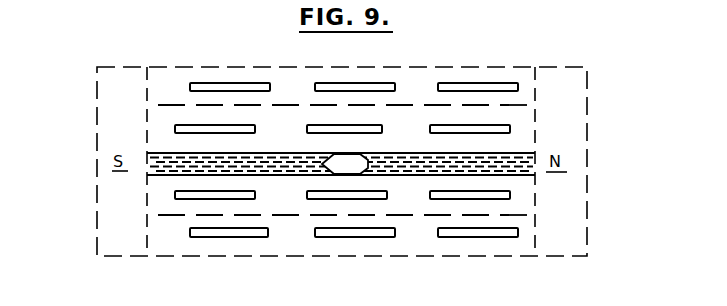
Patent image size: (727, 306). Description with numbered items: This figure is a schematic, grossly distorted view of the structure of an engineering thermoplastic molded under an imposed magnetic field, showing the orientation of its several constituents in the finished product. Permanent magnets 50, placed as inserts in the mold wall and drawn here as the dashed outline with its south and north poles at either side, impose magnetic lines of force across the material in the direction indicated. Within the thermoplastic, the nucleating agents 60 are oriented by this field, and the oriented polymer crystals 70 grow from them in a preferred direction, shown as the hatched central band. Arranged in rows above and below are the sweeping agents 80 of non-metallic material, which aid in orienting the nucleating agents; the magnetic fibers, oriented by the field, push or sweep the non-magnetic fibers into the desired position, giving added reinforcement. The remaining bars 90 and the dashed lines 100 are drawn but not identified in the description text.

The permanent magnets 50 is at (96, 134).
The nucleating agents 60 is at (361, 157).
The oriented polymer crystals 70 is at (415, 163).
The sweeping agents 80 is at (209, 128).
The outer bars 90 is at (502, 88).
The dashed gap lines 100 is at (176, 104).